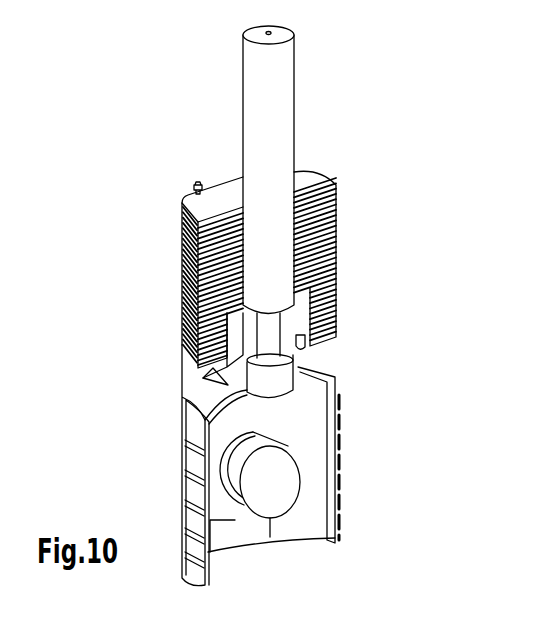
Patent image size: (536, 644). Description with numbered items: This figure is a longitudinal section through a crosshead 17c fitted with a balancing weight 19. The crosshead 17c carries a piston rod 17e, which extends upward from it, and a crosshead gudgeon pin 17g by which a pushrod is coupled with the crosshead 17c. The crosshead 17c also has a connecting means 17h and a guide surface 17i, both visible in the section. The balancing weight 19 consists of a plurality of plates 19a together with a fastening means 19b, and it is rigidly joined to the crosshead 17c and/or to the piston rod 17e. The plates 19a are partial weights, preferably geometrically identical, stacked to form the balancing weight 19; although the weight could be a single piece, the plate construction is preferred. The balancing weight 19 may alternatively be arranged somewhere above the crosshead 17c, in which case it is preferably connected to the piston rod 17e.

The piston rod 17e is at (288, 104).
The balancing weight 19 is at (336, 213).
The plates 19a is at (323, 316).
The fastening means 19b is at (194, 186).
The crosshead 17c is at (296, 338).
The connecting means 17h is at (228, 384).
The guide surface 17i is at (350, 443).
The crosshead gudgeon pin 17g is at (280, 492).